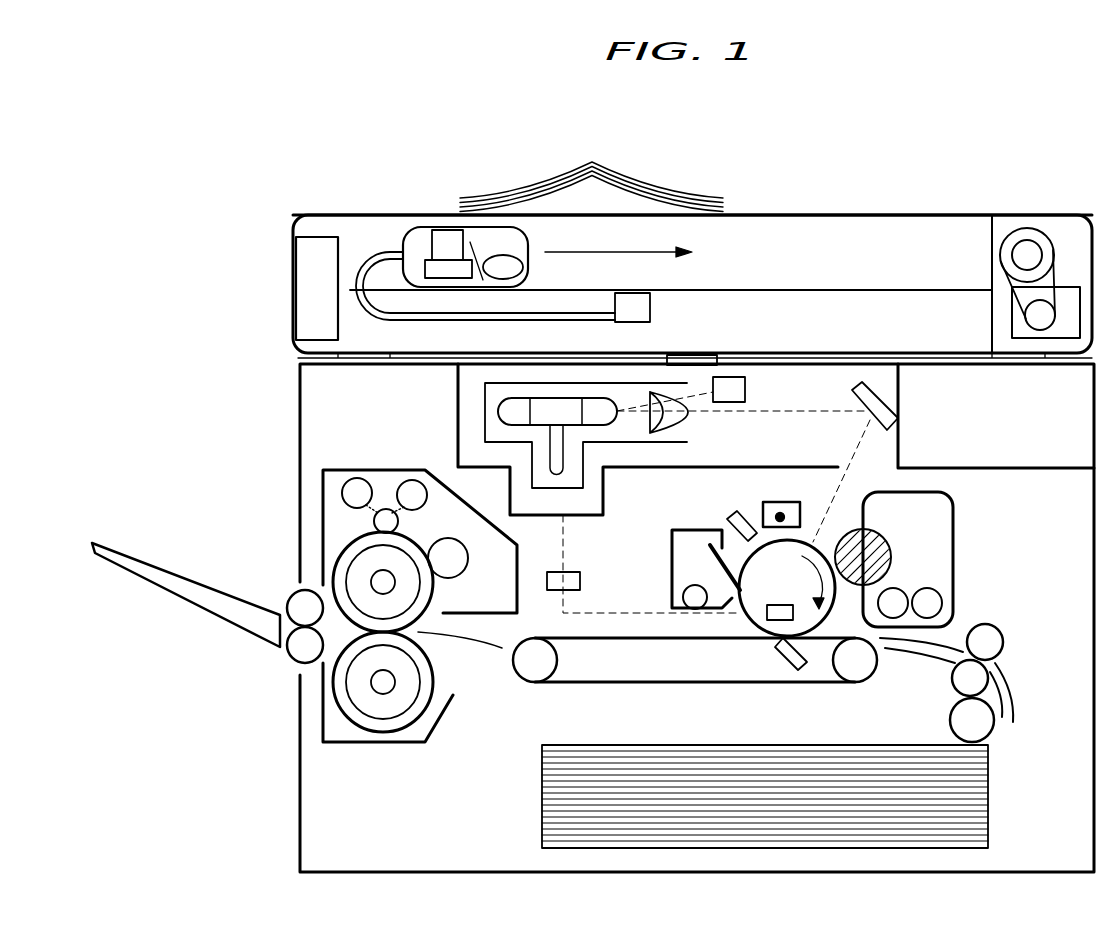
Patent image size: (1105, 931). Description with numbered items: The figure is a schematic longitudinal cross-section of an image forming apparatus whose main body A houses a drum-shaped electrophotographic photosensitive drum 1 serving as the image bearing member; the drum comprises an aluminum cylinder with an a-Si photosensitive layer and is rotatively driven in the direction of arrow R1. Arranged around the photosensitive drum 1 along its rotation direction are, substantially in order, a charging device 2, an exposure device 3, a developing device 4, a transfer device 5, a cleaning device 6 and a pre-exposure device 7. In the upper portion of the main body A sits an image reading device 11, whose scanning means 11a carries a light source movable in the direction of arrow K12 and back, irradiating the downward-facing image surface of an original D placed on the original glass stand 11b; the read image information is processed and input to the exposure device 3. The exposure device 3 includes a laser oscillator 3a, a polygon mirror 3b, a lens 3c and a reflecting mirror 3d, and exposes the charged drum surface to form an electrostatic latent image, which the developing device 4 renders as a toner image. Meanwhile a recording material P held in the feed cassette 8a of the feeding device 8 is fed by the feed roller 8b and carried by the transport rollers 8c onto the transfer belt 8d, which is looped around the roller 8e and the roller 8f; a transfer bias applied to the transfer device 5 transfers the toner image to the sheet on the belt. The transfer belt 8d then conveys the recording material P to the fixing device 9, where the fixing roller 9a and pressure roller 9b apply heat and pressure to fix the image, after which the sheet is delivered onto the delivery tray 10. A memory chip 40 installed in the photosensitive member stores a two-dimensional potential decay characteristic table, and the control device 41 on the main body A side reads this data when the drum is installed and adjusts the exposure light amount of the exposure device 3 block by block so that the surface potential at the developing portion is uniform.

The main body of the image forming apparatus A is at (290, 440).
The photosensitive drum 1 is at (800, 546).
The charging device 2 is at (775, 503).
The exposure device 3 is at (478, 418).
The laser oscillator 3a is at (745, 390).
The polygon mirror 3b is at (575, 398).
The lens 3c is at (688, 420).
The reflecting mirror 3d is at (878, 383).
The developing device 4 is at (952, 517).
The transfer device 5 is at (788, 670).
The cleaning device 6 is at (672, 555).
The pre-exposure device 7 is at (730, 517).
The feeding device 8 is at (1022, 679).
The feed cassette 8a is at (542, 820).
The feed roller 8b is at (978, 728).
The transport rollers 8c is at (990, 633).
The transfer belt 8d is at (622, 640).
The roller 8e is at (863, 663).
The roller 8f is at (525, 667).
The fixing device 9 is at (375, 460).
The fixing roller 9a is at (347, 557).
The pressure roller 9b is at (350, 715).
The delivery tray 10 is at (133, 562).
The image reading device 11 is at (951, 204).
The scanning means 11a is at (408, 228).
The original glass stand 11b is at (822, 212).
The memory chip (storing means) 40 is at (778, 605).
The control device 41 is at (580, 585).
The original D is at (668, 190).
The movement direction of the scanning means K12 is at (618, 242).
The rotation direction of the photosensitive drum R1 is at (807, 582).
The recording material P is at (725, 777).